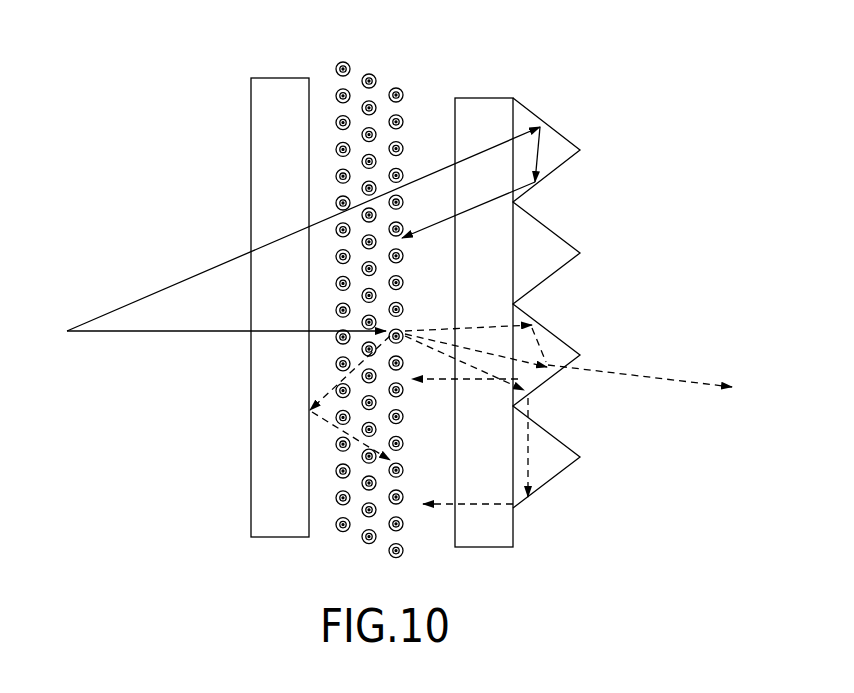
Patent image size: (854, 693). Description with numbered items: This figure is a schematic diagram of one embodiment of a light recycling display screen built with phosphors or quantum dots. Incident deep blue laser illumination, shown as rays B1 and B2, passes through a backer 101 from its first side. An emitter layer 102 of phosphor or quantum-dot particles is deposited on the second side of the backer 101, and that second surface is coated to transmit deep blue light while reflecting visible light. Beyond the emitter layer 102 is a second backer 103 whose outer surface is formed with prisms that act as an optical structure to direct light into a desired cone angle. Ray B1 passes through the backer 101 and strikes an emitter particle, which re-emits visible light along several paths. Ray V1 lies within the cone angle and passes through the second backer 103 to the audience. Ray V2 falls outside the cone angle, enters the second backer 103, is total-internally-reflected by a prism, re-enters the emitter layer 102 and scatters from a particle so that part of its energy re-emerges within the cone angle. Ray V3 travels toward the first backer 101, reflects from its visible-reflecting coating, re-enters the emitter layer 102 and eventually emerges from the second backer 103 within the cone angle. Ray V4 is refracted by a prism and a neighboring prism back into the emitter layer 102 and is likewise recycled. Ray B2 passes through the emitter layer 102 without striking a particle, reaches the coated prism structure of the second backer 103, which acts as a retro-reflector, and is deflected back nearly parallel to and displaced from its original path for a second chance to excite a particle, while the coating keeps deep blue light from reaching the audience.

The backer 101 is at (280, 295).
The emitter layer 102 is at (370, 302).
The second backer 103 is at (517, 300).
The incident illumination ray B1 is at (303, 229).
The incident deep blue ray B2 is at (471, 182).
The ray path V1 is at (568, 356).
The ray path V2 is at (464, 374).
The ray path V3 is at (350, 398).
The ray path V4 is at (475, 470).